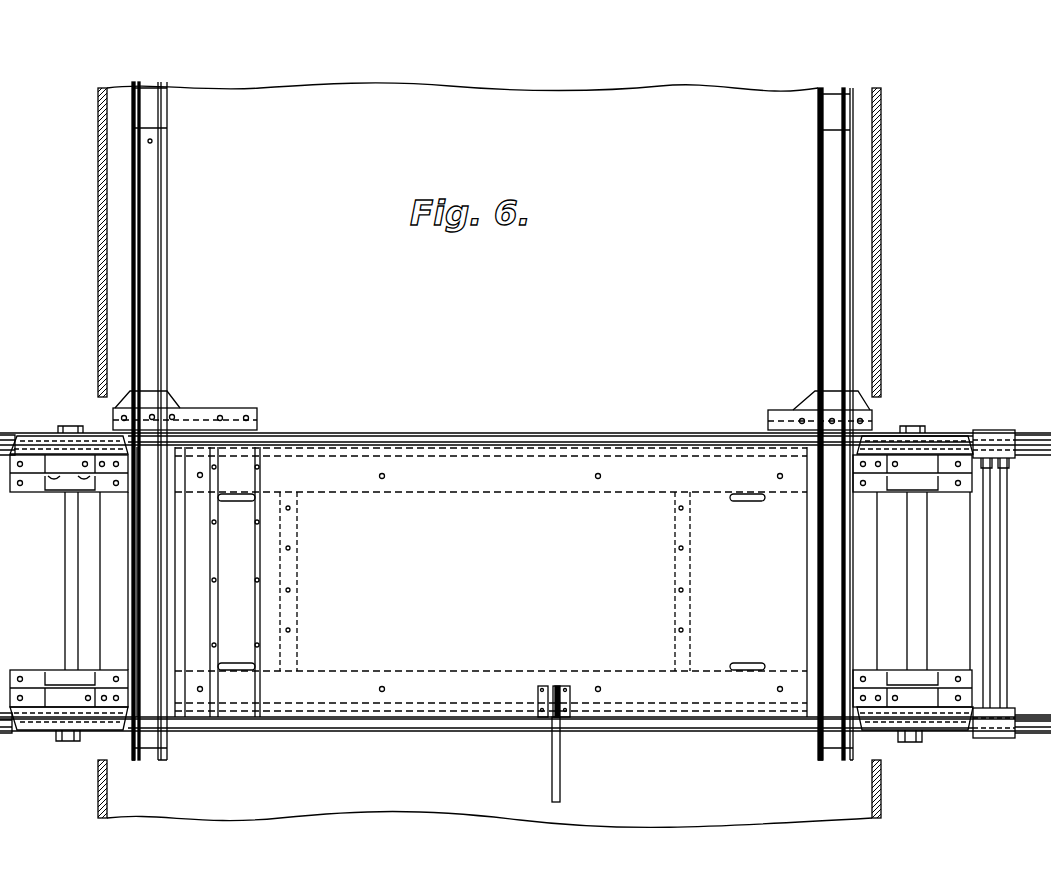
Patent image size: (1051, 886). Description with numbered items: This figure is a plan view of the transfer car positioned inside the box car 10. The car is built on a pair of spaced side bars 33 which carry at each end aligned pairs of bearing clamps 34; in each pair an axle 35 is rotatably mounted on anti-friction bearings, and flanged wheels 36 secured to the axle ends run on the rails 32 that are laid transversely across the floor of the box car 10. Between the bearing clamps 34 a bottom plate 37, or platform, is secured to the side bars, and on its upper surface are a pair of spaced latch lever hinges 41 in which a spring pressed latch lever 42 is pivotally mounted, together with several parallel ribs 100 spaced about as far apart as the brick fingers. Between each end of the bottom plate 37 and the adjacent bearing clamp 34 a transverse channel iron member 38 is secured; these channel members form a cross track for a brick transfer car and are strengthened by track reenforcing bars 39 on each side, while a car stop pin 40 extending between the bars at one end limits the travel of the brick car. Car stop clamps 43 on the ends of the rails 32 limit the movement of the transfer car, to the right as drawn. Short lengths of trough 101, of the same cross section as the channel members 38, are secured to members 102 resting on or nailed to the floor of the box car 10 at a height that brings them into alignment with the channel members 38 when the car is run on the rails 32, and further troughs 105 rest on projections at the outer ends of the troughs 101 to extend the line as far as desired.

The box car 10 is at (98, 160).
The rails 32 is at (1022, 444).
The side bars 33 is at (135, 660).
The bearing clamps 34 is at (44, 488).
The axle 35 is at (916, 553).
The flanged wheels 36 is at (38, 441).
The bottom plate 37 is at (340, 440).
The channel iron member 38 is at (148, 530).
The track reenforcing bar 39 is at (137, 502).
The car stop pin 40 is at (150, 750).
The latch lever hinges 41 is at (540, 700).
The spring pressed latch lever 42 is at (560, 766).
The car stop clamps 43 is at (1008, 458).
The ribs 100 is at (262, 488).
The short lengths of trough 101 is at (158, 338).
The members 102 is at (190, 404).
The other troughs 105 is at (168, 98).